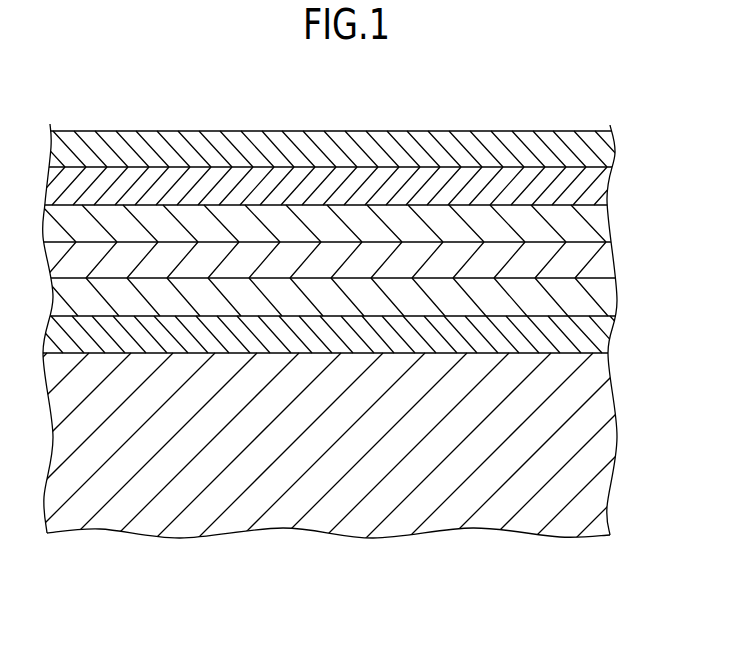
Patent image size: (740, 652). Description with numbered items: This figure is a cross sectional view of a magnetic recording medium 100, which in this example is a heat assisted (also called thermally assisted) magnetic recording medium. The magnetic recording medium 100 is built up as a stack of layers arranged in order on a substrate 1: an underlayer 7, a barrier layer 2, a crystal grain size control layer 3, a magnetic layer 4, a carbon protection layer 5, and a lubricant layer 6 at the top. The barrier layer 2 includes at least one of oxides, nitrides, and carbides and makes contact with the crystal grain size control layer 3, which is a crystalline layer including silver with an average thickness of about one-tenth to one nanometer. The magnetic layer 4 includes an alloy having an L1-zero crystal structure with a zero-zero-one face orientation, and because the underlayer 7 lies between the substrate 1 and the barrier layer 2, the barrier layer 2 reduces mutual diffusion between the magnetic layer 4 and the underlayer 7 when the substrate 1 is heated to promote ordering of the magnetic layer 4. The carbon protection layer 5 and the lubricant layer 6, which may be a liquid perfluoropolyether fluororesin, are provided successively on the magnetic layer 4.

The magnetic recording medium 100 is at (616, 94).
The substrate 1 is at (597, 438).
The barrier layer 2 is at (597, 297).
The crystal grain size control layer 3 is at (600, 258).
The magnetic layer 4 is at (597, 223).
The carbon protection layer 5 is at (598, 185).
The lubricant layer 6 is at (597, 148).
The underlayer 7 is at (598, 333).